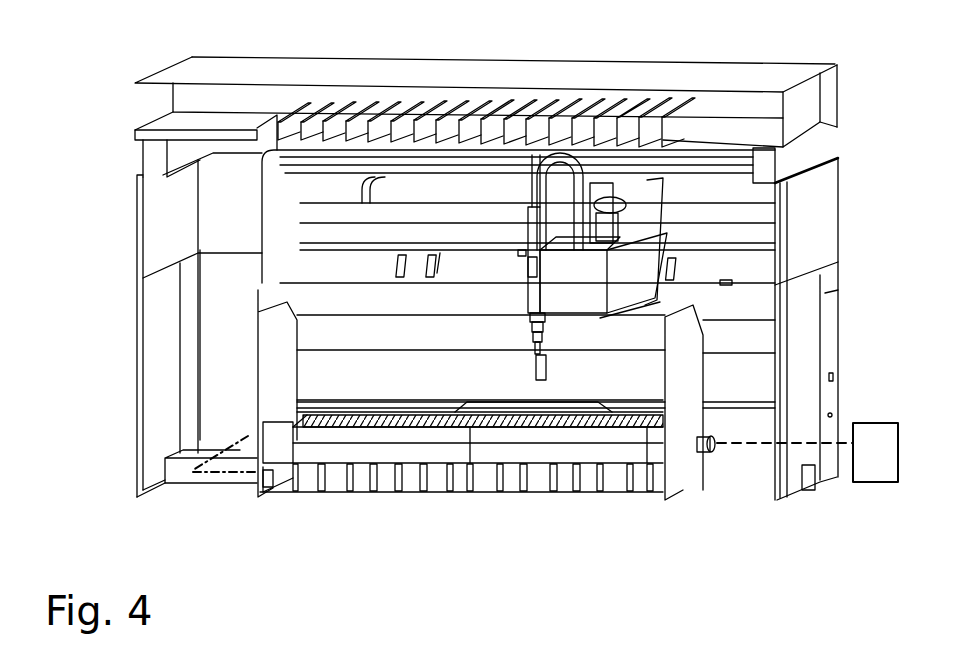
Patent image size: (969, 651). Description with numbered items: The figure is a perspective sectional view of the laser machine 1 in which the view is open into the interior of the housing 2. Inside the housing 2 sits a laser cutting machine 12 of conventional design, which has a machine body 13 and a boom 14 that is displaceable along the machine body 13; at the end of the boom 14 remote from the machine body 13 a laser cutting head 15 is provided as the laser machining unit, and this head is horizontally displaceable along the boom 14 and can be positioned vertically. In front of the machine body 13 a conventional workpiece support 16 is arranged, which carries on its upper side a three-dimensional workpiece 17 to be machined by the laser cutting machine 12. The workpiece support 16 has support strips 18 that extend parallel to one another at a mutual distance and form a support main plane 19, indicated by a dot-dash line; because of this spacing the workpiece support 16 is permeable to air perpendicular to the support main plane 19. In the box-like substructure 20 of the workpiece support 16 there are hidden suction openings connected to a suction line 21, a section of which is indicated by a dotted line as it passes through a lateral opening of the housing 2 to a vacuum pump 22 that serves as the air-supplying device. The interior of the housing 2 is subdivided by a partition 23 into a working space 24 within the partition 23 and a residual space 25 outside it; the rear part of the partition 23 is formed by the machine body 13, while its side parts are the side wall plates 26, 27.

The laser machine 1 is at (118, 212).
The housing 2 is at (849, 213).
The laser cutting machine 12 is at (226, 290).
The machine body 13 is at (330, 281).
The boom 14 is at (568, 290).
The laser cutting head 15 is at (518, 338).
The workpiece support 16 is at (262, 480).
The three-dimensional workpiece 17 is at (545, 406).
The support strips 18 is at (310, 422).
The support main plane 19 is at (233, 443).
The box-like substructure 20 is at (327, 444).
The suction line 21 is at (703, 456).
The vacuum pump 22 is at (865, 467).
The partition 23 is at (694, 348).
The working space 24 is at (418, 393).
The residual space 25 is at (213, 351).
The side wall plate 26 is at (672, 406).
The side wall plate 27 is at (265, 381).